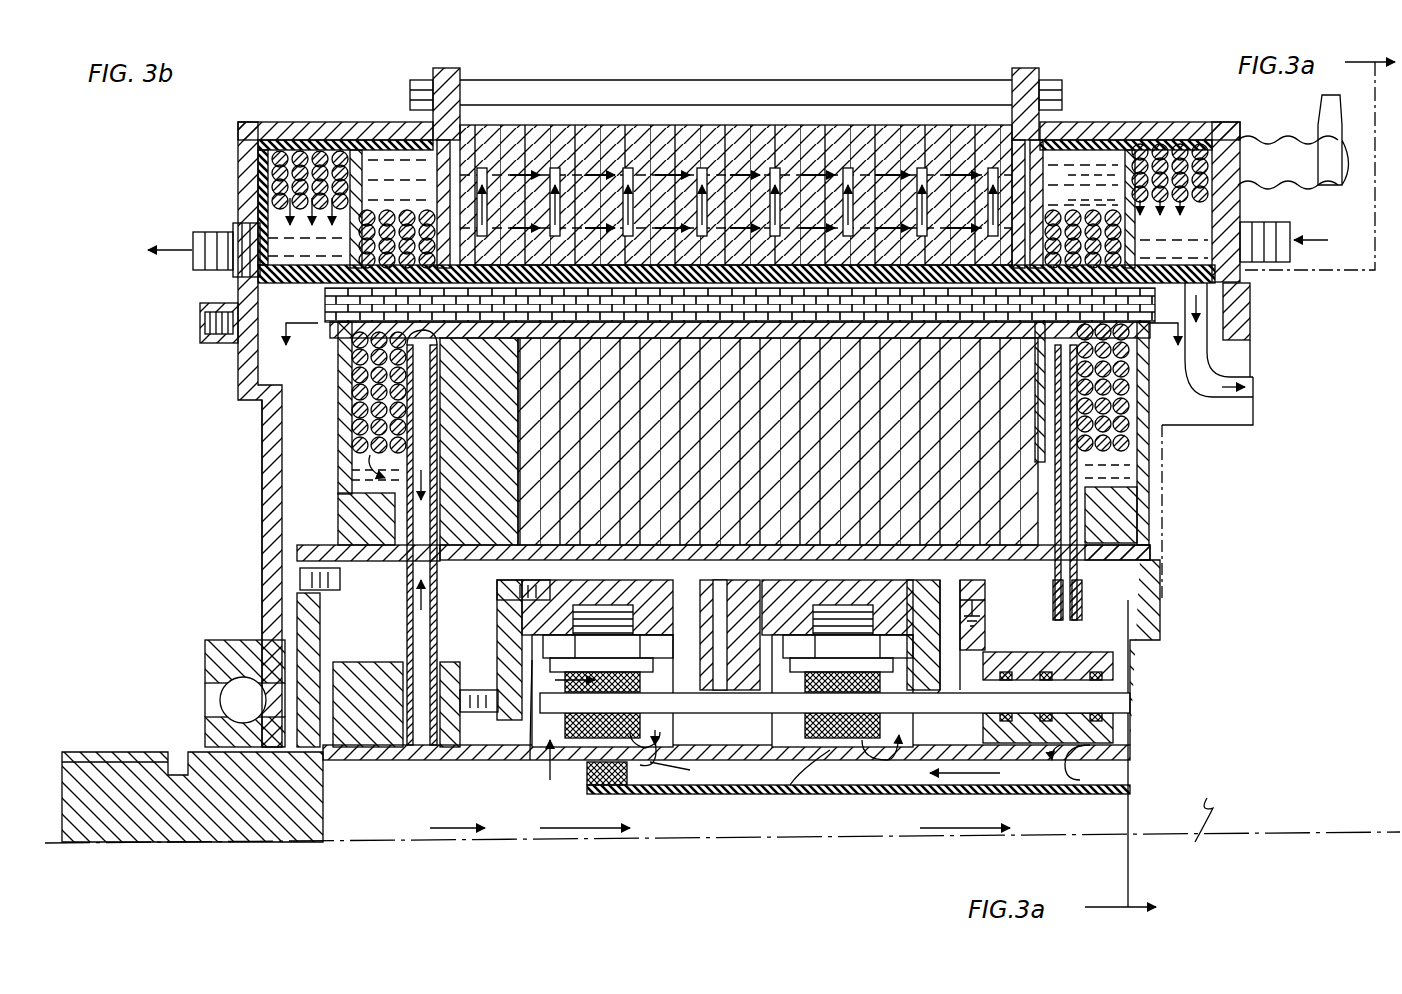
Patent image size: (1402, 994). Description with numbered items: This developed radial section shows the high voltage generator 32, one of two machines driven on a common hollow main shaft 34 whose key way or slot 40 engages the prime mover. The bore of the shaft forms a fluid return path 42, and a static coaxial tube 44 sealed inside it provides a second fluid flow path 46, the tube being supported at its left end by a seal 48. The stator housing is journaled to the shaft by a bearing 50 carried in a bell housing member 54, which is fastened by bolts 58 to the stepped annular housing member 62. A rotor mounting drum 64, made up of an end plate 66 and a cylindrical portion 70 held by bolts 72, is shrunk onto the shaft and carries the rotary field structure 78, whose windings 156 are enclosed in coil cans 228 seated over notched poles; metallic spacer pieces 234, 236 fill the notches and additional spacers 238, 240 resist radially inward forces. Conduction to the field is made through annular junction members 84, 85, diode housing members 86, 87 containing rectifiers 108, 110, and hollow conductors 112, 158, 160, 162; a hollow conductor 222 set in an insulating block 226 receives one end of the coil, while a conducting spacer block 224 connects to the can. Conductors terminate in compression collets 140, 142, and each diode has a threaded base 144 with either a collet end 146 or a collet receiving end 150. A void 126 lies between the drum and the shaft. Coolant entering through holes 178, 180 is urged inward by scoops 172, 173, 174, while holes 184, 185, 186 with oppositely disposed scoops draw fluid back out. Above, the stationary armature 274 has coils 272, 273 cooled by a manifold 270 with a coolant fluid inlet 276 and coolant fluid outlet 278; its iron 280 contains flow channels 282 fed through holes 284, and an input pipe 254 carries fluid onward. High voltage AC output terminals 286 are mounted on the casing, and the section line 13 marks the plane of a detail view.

The section line 13 is at (729, 354).
The high voltage generator 32 is at (245, 520).
The main shaft 34 is at (1120, 772).
The key way or slot 40 is at (108, 752).
The fluid return path 42 is at (745, 815).
The tube 44 is at (900, 800).
The second fluid flow path 46 is at (1060, 805).
The seal 48 is at (605, 630).
The bearing 50 is at (205, 670).
The bell housing member 54 is at (262, 490).
The bolts 58 is at (814, 112).
The intermediate stepped annular housing member 62 is at (1108, 140).
The rotor mounting drum 64 is at (325, 545).
The end plate 66 is at (320, 620).
The cylindrical portion 70 is at (372, 560).
The bolts 72 is at (300, 583).
The rotary field structure 78 is at (1160, 412).
The annular junction member 84 is at (1022, 668).
The annular junction member 85 is at (368, 688).
The annular diode housing member 86 is at (932, 635).
The annular diode housing member 87 is at (720, 580).
The diode 108 is at (925, 640).
The diode 110 is at (645, 630).
The hollow conductor 112 is at (960, 700).
The void 126 is at (1106, 652).
The compression collet 140 is at (572, 760).
The feed-through compression collet 142 is at (835, 700).
The threaded base 144 is at (835, 630).
The collet end 146 is at (885, 760).
The collet receiving end 150 is at (607, 765).
The winding 156 is at (1130, 452).
The hollow conductor 158 is at (975, 586).
The hollow conductor 160 is at (435, 582).
The hollow conductor 162 is at (478, 698).
The scoop 172 is at (1070, 780).
The scoop 173 is at (922, 797).
The scoop 174 is at (695, 775).
The hole 178 is at (1040, 758).
The hole 180 is at (658, 760).
The hole 184 is at (800, 775).
The hole 185 is at (469, 808).
The hole 186 is at (532, 760).
The hollow conductor 222 is at (480, 438).
The conducting spacer block 224 is at (1000, 345).
The insulating block 226 is at (740, 324).
The coil can 228 is at (1130, 490).
The metallic spacer piece 234 is at (500, 378).
The metallic spacer piece 236 is at (1040, 380).
The spacer 238 is at (345, 500).
The spacer 240 is at (1150, 532).
The input pipe 254 is at (1240, 405).
The manifold 270 is at (1100, 188).
The coil 272 is at (1258, 108).
The coil 273 is at (1080, 175).
The stationary armature 274 is at (680, 110).
The coolant fluid inlet 276 is at (1293, 242).
The coolant fluid outlet 278 is at (208, 232).
The iron 280 is at (885, 138).
The coolant fluid flow channel 282 is at (630, 150).
The holes 284 is at (430, 160).
The high voltage AC output terminals 286 is at (1340, 188).